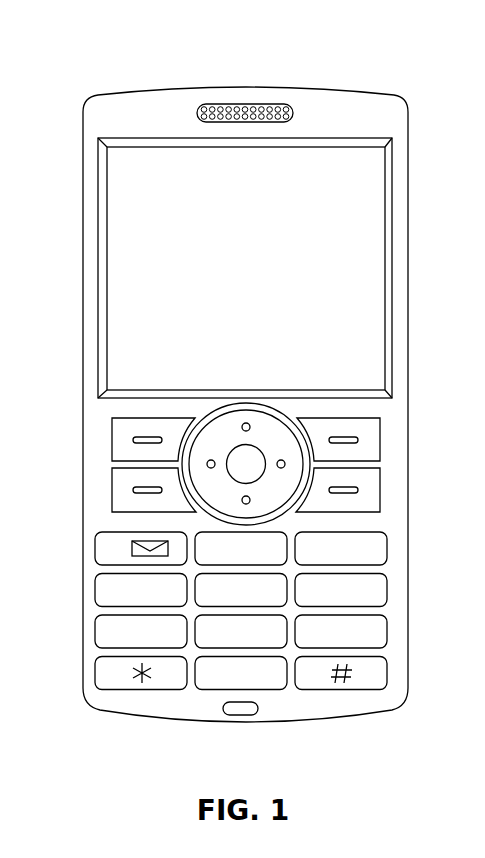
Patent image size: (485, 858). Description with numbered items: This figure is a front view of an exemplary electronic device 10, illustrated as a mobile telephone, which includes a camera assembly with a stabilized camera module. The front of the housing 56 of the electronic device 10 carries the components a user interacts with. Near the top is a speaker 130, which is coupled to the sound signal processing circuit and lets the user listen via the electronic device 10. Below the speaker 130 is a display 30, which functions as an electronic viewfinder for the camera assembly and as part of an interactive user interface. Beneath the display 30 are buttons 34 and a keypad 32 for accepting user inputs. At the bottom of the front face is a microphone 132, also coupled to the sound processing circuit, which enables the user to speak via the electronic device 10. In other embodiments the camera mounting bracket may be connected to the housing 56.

The electronic device 10 is at (93, 76).
The speaker 130 is at (245, 102).
The display 30 is at (122, 254).
The buttons 34 is at (397, 465).
The keypad 32 is at (161, 704).
The microphone 132 is at (247, 716).
The housing 56 is at (343, 708).